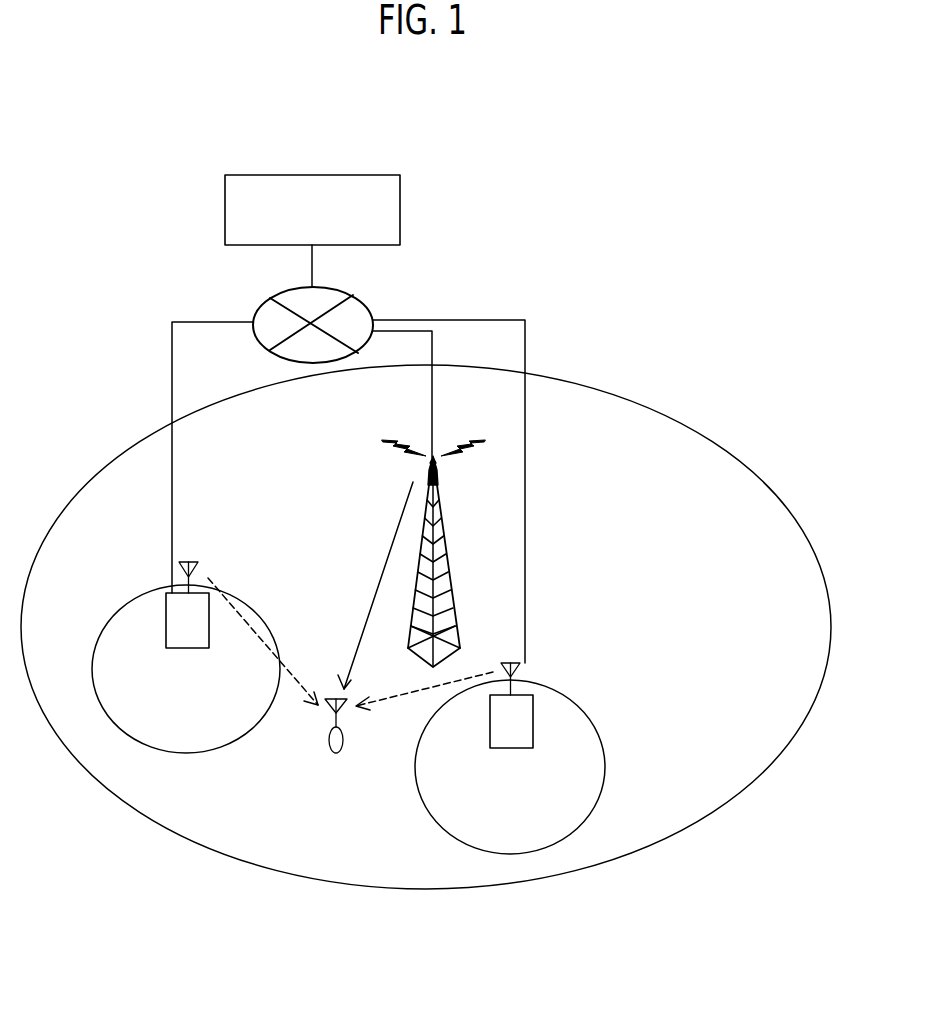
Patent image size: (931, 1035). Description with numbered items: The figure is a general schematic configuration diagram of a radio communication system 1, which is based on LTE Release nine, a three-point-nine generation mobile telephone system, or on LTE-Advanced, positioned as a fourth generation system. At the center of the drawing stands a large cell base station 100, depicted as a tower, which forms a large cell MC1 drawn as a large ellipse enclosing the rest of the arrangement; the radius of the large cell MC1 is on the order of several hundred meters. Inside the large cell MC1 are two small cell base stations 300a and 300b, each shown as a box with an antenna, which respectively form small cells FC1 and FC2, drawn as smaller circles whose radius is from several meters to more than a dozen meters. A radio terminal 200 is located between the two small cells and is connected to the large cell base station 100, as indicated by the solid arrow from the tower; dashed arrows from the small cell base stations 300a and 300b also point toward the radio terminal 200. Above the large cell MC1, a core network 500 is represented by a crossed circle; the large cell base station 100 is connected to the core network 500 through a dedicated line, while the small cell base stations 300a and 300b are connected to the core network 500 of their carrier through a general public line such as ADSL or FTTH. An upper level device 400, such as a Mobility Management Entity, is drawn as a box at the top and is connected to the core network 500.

The radio communication system 1 is at (633, 311).
The large cell base station 100 is at (442, 520).
The radio terminal 200 is at (336, 754).
The small cell base station 300a is at (177, 622).
The small cell base station 300b is at (523, 708).
The upper level device 400 is at (225, 212).
The core network 500 is at (343, 288).
The large cell MC1 is at (666, 418).
The small cell FC1 is at (100, 640).
The small cell FC2 is at (605, 757).